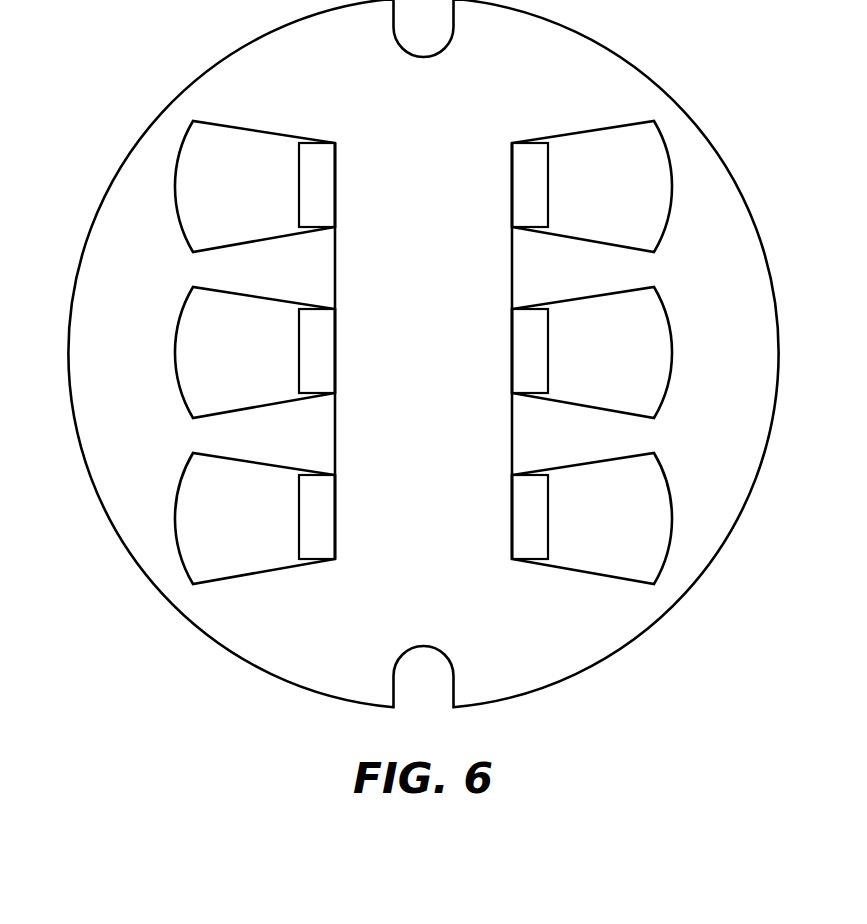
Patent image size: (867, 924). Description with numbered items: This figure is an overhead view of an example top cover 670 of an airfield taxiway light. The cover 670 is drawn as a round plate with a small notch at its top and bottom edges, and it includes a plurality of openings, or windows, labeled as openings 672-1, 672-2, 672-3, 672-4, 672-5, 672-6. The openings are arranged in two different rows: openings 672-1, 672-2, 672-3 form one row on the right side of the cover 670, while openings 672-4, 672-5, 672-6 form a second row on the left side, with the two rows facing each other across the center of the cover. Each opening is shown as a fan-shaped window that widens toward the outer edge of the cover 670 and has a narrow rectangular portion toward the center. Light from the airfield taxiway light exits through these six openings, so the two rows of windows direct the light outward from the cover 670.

The cover 670 is at (103, 255).
The opening 672-1 is at (528, 186).
The opening 672-2 is at (528, 352).
The opening 672-3 is at (528, 518).
The opening 672-4 is at (318, 186).
The opening 672-5 is at (318, 352).
The opening 672-6 is at (318, 518).